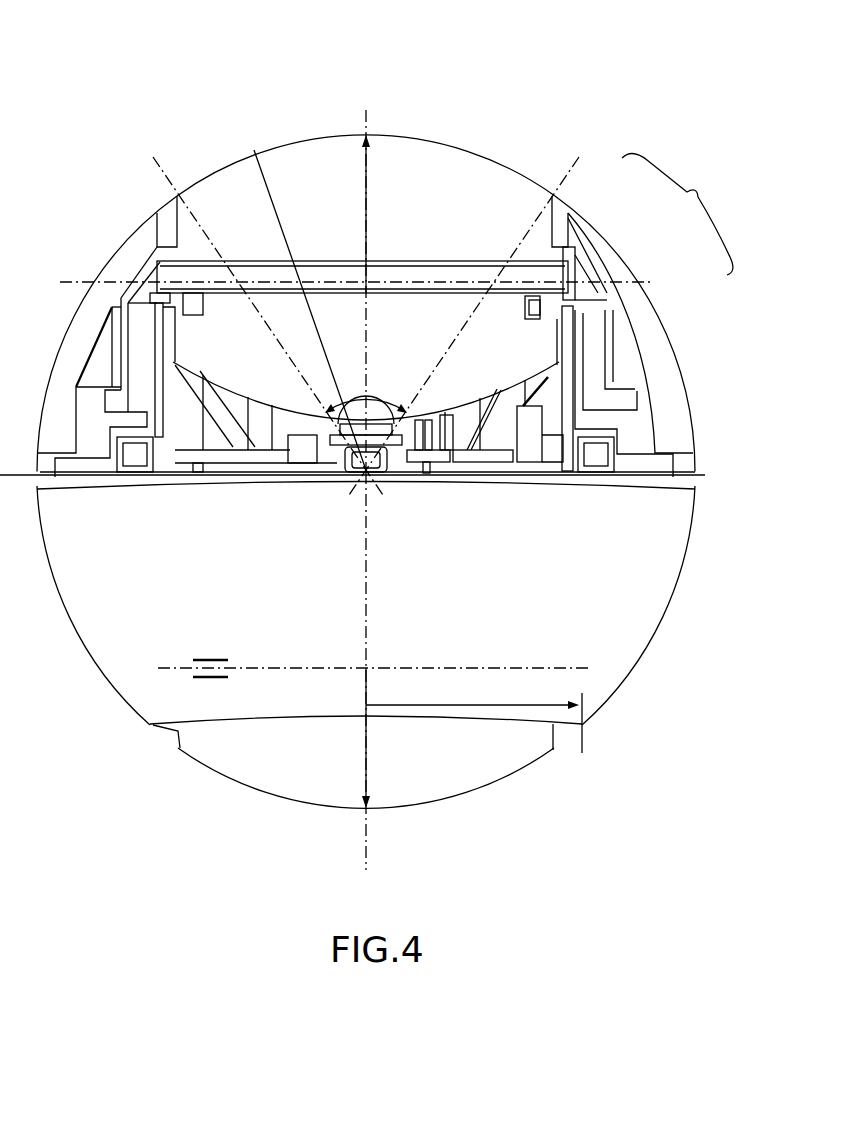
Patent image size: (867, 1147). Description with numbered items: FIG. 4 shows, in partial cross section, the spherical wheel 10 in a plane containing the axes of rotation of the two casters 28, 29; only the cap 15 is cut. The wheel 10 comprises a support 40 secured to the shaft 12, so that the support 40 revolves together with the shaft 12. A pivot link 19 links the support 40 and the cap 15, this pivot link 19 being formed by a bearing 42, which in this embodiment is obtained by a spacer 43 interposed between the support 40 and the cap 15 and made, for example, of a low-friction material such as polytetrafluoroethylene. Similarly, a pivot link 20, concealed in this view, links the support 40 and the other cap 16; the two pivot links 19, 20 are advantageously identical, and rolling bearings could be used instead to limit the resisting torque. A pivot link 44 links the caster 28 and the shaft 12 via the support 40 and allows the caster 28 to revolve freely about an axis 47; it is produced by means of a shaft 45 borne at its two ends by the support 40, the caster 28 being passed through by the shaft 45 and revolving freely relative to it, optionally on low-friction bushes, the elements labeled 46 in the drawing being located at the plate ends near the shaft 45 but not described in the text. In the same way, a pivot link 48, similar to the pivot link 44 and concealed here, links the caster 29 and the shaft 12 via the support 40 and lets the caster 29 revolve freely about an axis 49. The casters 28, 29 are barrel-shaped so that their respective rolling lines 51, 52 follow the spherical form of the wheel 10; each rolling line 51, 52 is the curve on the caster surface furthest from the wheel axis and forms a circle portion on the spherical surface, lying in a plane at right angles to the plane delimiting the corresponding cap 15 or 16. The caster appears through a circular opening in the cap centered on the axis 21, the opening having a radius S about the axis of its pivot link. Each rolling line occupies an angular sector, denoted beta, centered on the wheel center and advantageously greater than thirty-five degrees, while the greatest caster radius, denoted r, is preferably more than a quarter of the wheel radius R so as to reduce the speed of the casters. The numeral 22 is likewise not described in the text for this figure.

The wheel 10 is at (157, 88).
The shaft 12 is at (399, 490).
The cap 15 is at (658, 363).
The cap 16 is at (650, 617).
The pivot link 19 is at (677, 214).
The pivot link 20 is at (657, 569).
The axis 21 is at (367, 322).
The optical axis (lower) 22 is at (368, 580).
The caster 28 is at (475, 140).
The caster 29 is at (485, 767).
The support 40 is at (585, 428).
The bearing 42 is at (613, 347).
The spacer 43 is at (588, 337).
The pivot link 44 is at (495, 252).
The shaft 45 is at (380, 277).
The spacer blocks 46 is at (212, 305).
The axis 47 is at (108, 275).
The pivot link 48 is at (205, 660).
The axis 49 is at (167, 668).
The rolling line 51 is at (402, 138).
The rolling line 52 is at (403, 807).